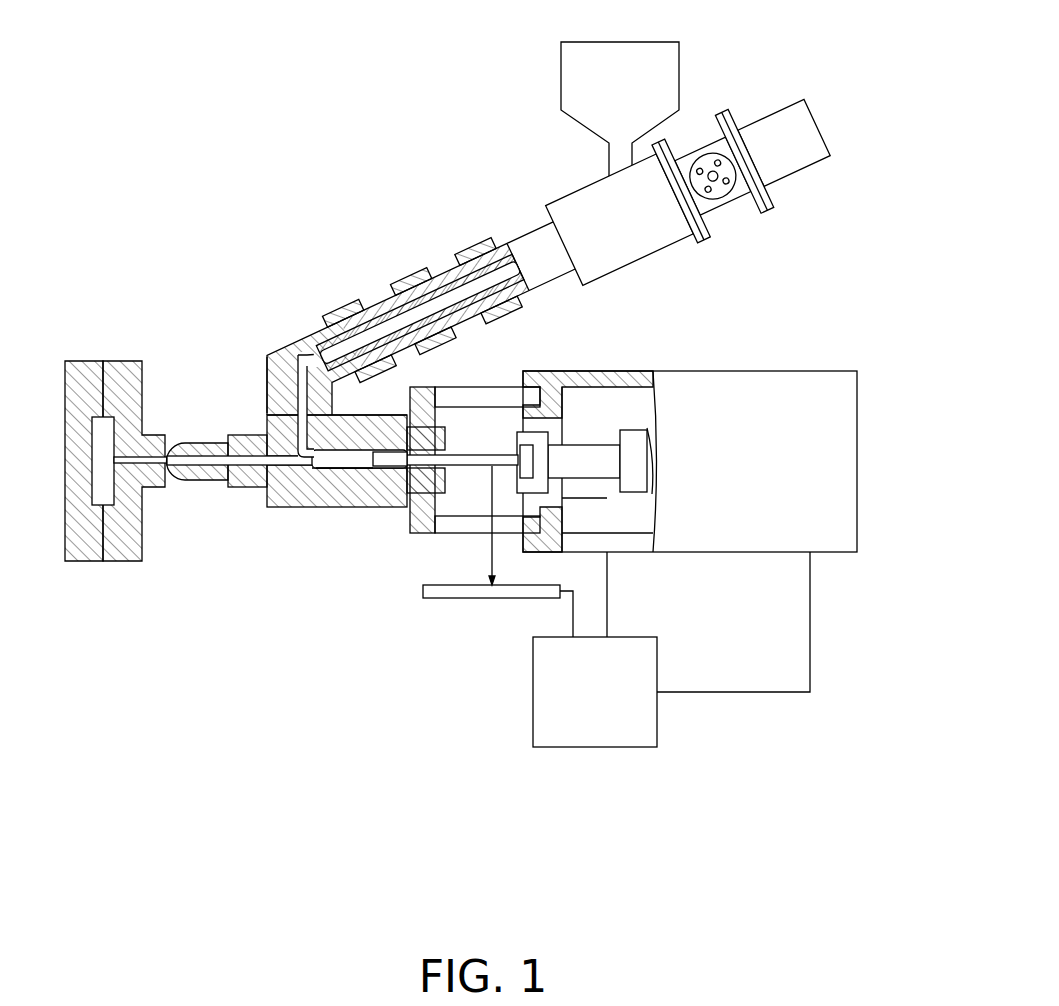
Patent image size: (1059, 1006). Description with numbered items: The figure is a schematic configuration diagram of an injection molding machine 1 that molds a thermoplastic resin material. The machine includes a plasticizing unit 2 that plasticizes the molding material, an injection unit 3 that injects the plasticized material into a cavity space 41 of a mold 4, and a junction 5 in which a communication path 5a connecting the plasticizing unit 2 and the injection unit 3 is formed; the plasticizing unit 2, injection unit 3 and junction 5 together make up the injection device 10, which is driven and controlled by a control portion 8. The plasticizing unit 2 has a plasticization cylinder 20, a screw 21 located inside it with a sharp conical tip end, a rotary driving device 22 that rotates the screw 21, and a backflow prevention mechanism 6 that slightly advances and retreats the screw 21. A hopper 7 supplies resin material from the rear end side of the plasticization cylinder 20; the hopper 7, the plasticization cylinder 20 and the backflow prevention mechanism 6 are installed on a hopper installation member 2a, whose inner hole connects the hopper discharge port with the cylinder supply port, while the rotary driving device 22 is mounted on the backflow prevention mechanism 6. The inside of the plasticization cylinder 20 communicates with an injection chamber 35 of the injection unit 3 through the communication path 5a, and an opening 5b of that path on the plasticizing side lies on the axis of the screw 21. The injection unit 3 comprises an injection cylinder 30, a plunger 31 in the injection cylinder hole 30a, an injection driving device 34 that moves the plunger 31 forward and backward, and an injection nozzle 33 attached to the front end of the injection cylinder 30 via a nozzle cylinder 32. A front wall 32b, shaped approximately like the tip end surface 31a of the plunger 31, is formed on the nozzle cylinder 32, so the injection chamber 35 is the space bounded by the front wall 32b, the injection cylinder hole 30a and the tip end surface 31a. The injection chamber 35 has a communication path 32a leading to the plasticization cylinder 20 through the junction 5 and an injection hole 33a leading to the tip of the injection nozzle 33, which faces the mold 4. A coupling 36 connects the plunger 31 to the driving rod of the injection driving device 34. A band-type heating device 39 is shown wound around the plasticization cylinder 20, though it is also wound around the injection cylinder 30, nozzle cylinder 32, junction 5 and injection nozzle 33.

The injection molding machine 1 is at (802, 52).
The plasticizing unit 2 is at (438, 262).
The hopper installation member 2a is at (633, 255).
The injection unit 3 is at (311, 590).
The mold 4 is at (116, 449).
The junction 5 is at (288, 357).
The communication path 5a is at (266, 382).
The opening 5b is at (303, 344).
The backflow prevention mechanism 6 is at (740, 192).
The hopper 7 is at (679, 52).
The controller 8 is at (532, 723).
The injection device 10 is at (236, 275).
The plasticization cylinder 20 is at (366, 304).
The screw 21 is at (397, 308).
The rotary driving device 22 is at (797, 167).
The injection cylinder 30 is at (389, 500).
The injection cylinder hole 30a is at (361, 468).
The plunger 31 is at (437, 411).
The tip end surface 31a is at (364, 450).
The nozzle cylinder 32 is at (303, 485).
The communication path 32a is at (265, 418).
The front wall 32b is at (333, 478).
The injection nozzle 33 is at (240, 494).
The injection hole 33a is at (256, 480).
The injection driving device 34 is at (726, 554).
The injection chamber 35 is at (358, 470).
The coupling 36 is at (523, 430).
The heating device 39 is at (476, 246).
The cavity space 41 is at (110, 492).